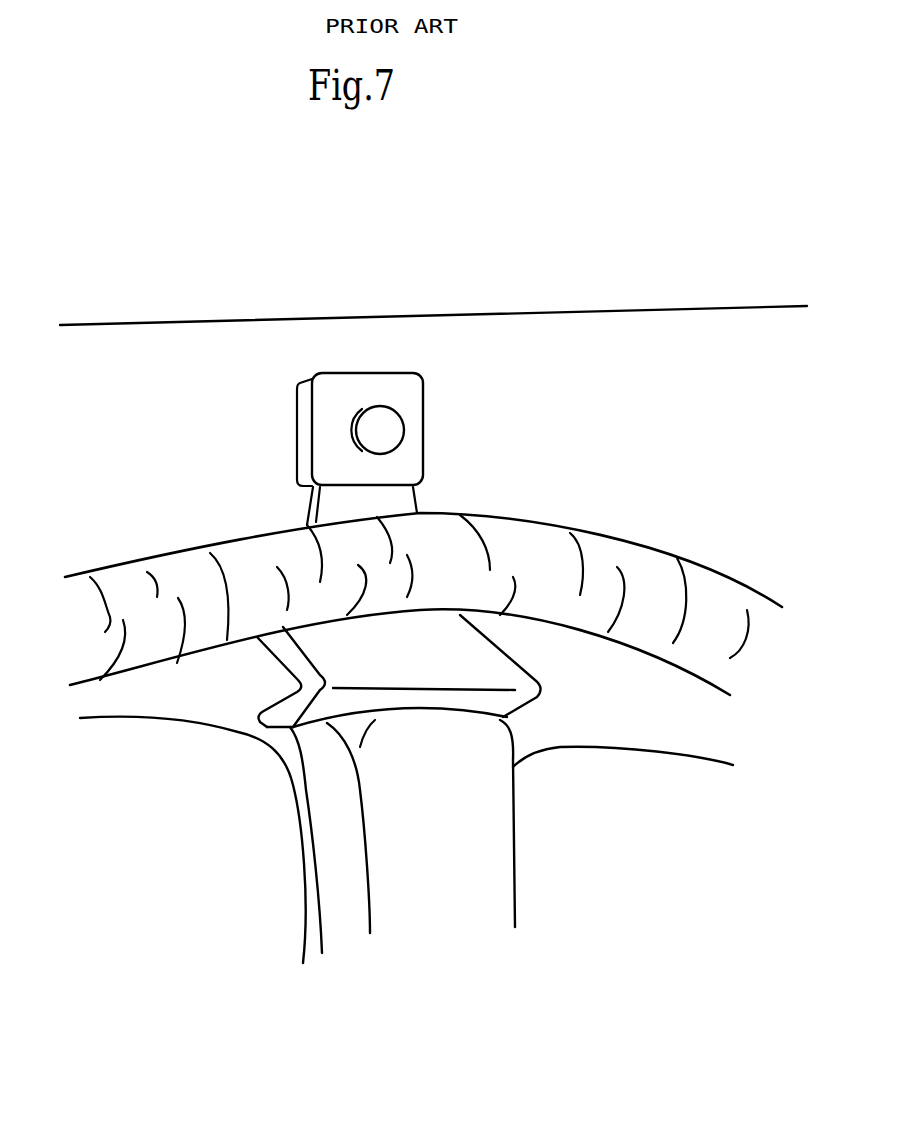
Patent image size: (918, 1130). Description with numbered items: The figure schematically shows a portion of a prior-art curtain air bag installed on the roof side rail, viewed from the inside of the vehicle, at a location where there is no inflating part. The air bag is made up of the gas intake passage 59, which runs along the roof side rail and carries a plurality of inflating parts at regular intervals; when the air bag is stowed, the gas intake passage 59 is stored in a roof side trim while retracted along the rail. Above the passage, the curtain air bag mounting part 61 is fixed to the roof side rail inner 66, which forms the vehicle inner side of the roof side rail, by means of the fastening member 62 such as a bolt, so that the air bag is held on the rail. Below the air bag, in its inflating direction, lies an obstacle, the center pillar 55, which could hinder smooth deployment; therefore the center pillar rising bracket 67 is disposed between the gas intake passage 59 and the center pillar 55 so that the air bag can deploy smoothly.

The center pillar 55 is at (492, 868).
The gas intake passage 59 is at (192, 578).
The curtain air bag mounting part 61 is at (372, 383).
The fastening member 62 is at (390, 430).
The roof side rail inner 66 is at (195, 333).
The center pillar rising bracket 67 is at (493, 670).